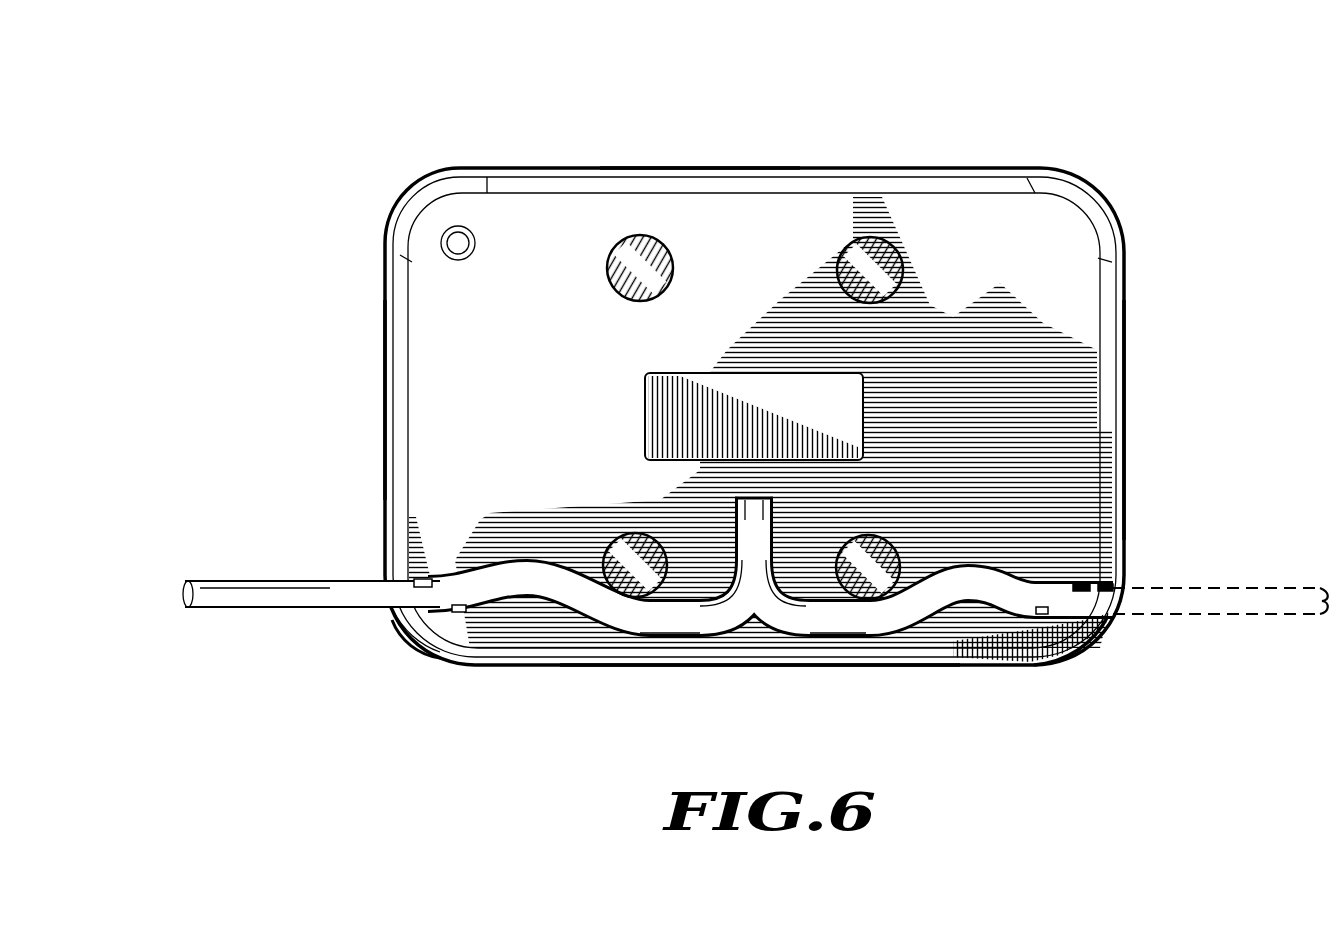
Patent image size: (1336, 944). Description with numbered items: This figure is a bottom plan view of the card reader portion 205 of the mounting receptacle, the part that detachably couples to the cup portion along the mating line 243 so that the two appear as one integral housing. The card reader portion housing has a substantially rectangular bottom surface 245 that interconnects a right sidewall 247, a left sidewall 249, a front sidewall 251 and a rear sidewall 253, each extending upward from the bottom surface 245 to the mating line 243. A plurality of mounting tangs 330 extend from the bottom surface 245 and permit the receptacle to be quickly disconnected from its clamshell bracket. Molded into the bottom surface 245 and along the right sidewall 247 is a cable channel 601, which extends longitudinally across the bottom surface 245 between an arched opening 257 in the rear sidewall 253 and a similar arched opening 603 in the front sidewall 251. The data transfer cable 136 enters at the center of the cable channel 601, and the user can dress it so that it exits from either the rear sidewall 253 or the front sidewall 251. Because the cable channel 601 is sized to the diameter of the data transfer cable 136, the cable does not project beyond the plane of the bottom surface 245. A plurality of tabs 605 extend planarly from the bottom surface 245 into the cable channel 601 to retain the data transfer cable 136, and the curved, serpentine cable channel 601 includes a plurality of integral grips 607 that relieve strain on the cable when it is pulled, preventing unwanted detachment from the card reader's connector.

The card reader portion 205 is at (1097, 130).
The mating line 243 is at (1097, 207).
The bottom surface 245 is at (1075, 296).
The right sidewall 247 is at (747, 667).
The left sidewall 249 is at (698, 167).
The front sidewall 251 is at (387, 365).
The rear sidewall 253 is at (1125, 442).
The arched opening 257 is at (1110, 612).
The mounting tangs 330 is at (632, 230).
The cable channel 601 is at (525, 560).
The arched opening 603 is at (400, 610).
The tabs 605 is at (420, 580).
The integral grips 607 is at (690, 606).
The data transfer cable 136 is at (1247, 588).